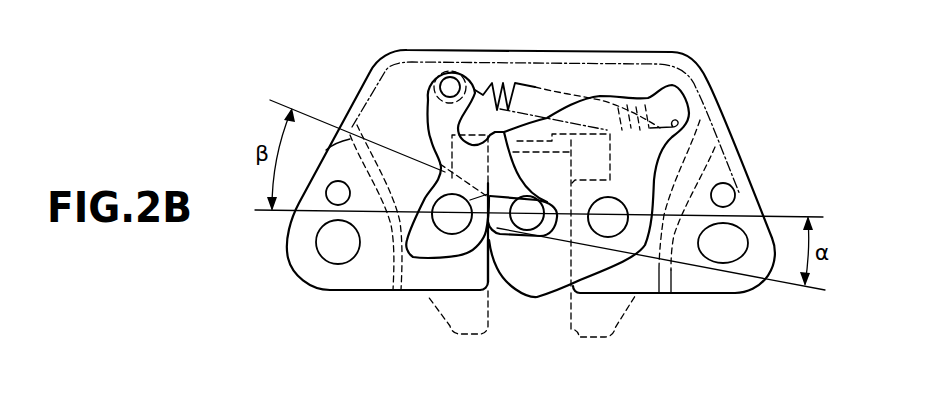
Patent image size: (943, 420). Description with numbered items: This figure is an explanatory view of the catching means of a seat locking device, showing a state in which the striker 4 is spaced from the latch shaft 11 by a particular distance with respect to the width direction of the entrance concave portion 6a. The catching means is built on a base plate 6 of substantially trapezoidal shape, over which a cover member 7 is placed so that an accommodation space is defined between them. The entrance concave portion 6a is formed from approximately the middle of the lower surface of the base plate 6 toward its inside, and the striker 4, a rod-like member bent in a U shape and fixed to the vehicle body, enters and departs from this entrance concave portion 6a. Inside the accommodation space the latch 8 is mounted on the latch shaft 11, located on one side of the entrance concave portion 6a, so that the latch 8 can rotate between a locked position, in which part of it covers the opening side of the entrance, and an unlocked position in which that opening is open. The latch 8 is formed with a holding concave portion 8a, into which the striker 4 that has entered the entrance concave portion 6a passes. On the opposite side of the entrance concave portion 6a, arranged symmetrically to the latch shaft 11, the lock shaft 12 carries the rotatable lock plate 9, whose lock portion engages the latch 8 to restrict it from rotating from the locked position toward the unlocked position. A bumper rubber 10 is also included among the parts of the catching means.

The striker 4 is at (522, 232).
The base plate 6 is at (553, 193).
The cover member 7 is at (732, 175).
The entrance concave portion 6a is at (492, 291).
The latch 8 is at (653, 103).
The holding concave portion 8a is at (555, 243).
The lock plate 9 is at (433, 118).
The bumper rubber 10 is at (610, 165).
The latch shaft 11 is at (617, 225).
The lock shaft 12 is at (450, 226).